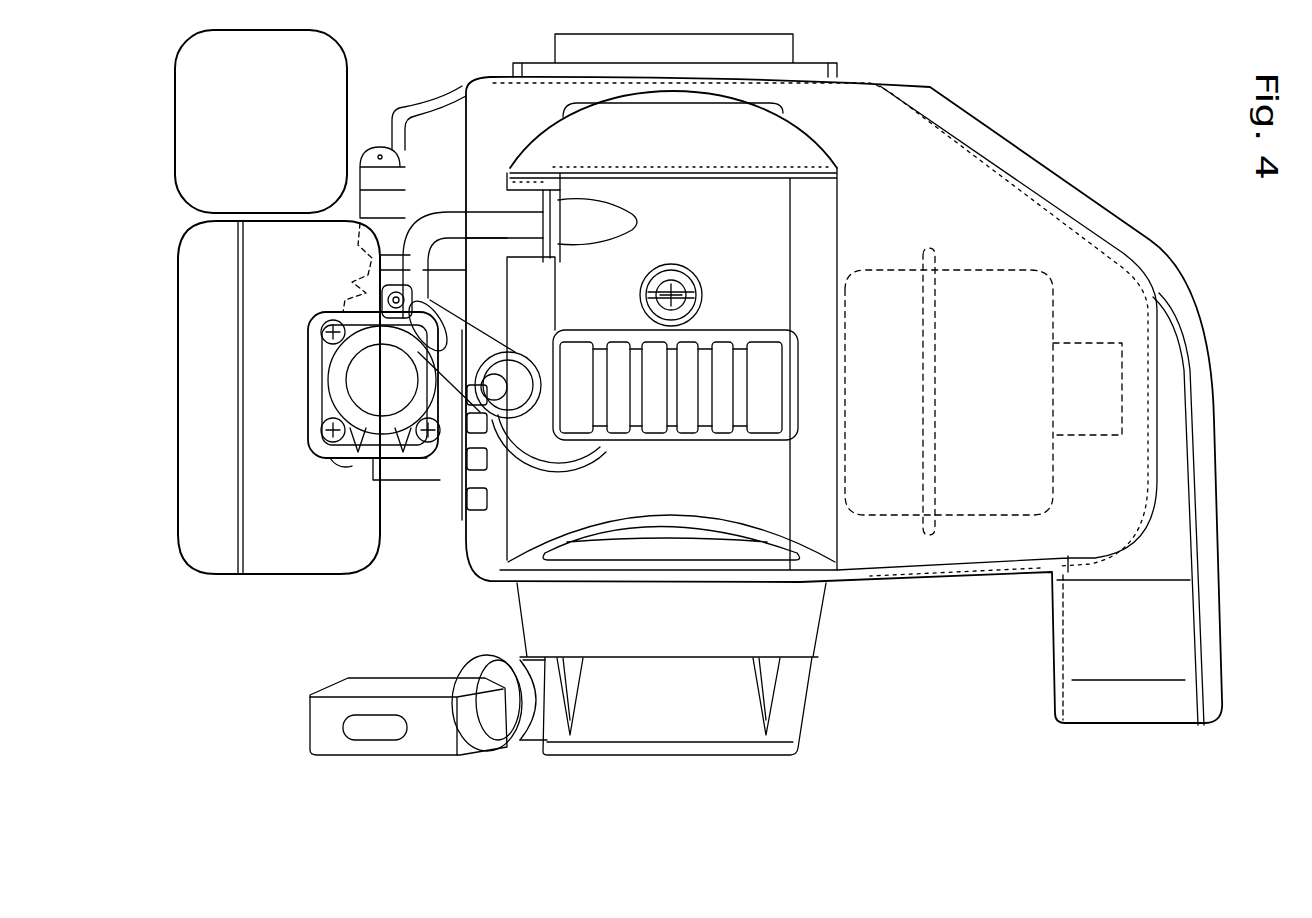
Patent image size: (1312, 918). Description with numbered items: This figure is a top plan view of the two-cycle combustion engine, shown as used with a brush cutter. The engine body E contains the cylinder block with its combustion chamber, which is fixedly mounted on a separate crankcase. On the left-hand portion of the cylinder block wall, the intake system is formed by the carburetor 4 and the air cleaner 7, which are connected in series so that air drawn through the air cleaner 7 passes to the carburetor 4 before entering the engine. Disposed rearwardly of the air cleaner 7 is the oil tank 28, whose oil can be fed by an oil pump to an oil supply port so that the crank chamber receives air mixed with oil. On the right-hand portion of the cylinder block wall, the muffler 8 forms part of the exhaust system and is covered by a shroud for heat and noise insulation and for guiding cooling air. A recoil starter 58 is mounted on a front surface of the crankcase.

The oil tank 28 is at (330, 68).
The air cleaner 7 is at (218, 578).
The carburetor 4 is at (405, 483).
The engine body E is at (838, 210).
The muffler 8 is at (953, 267).
The recoil starter 58 is at (427, 742).